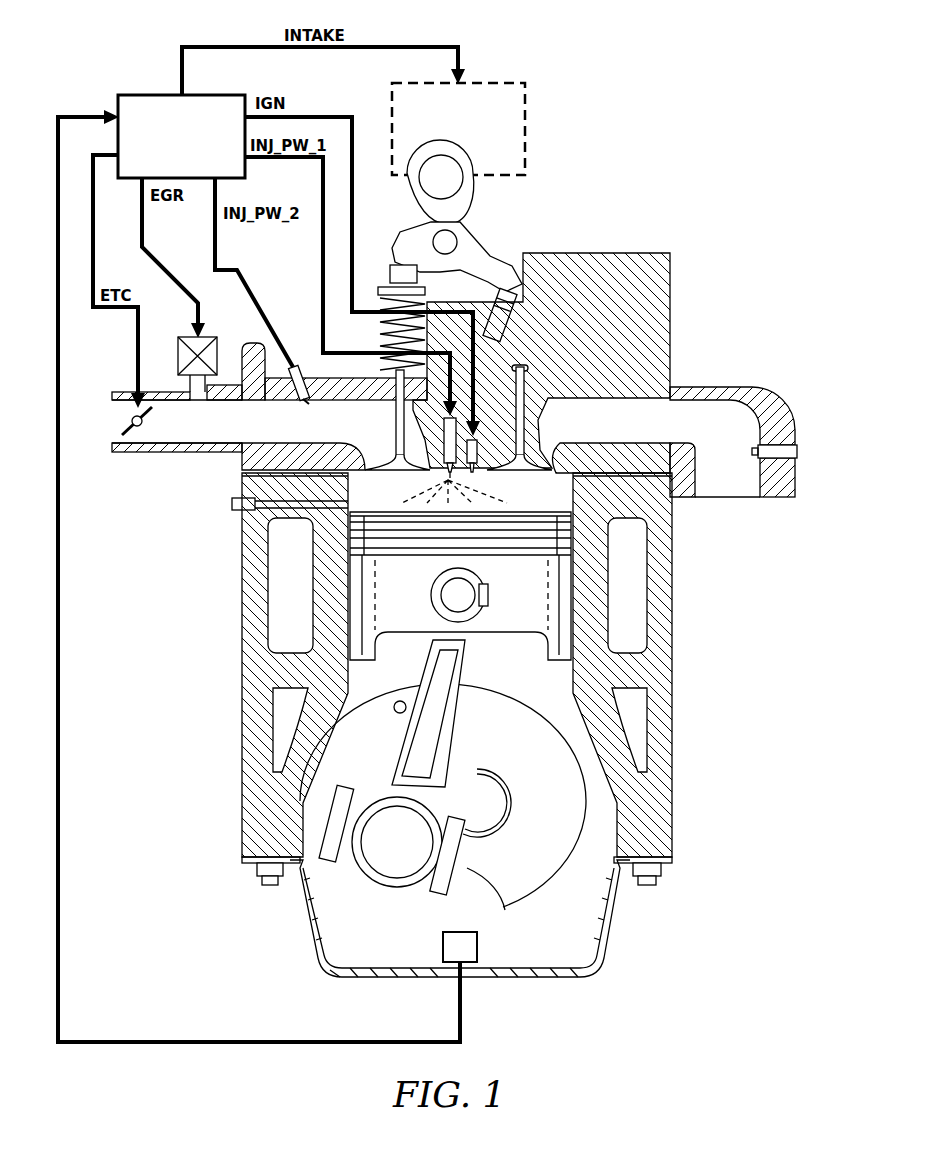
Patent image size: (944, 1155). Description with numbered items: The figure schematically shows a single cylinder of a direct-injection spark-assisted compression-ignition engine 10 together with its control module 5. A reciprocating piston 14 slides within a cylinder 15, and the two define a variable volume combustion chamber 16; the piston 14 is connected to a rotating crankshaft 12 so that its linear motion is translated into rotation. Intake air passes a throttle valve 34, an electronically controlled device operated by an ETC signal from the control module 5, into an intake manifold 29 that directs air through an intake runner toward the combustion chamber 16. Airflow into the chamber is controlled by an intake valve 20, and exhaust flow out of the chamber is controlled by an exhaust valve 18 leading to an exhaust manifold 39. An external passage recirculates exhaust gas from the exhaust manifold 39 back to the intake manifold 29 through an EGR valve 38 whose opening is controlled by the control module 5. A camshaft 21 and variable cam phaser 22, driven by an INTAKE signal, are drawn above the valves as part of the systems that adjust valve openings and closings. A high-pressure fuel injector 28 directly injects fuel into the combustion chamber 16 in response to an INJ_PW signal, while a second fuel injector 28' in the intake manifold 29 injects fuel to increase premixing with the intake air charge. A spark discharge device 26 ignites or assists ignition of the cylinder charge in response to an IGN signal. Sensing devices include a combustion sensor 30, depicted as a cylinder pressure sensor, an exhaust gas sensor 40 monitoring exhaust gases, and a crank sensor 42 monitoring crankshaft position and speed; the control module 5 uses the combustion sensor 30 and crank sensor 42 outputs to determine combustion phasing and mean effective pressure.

The control module 5 is at (158, 107).
The engine 10 is at (612, 985).
The crankshaft 12 is at (478, 812).
The piston 14 is at (542, 598).
The cylinder 15 is at (584, 511).
The combustion chamber 16 is at (384, 502).
The exhaust valve 18 is at (520, 440).
The intake valve 20 is at (400, 440).
The camshaft 21 is at (450, 178).
The variable cam phaser 22 is at (515, 128).
The spark discharge device 26 is at (476, 440).
The high-pressure fuel injector 28 is at (458, 399).
The second fuel injector 28' is at (289, 338).
The intake manifold 29 is at (233, 430).
The combustion sensor 30 is at (232, 512).
The throttle valve 34 is at (140, 440).
The EGR valve 38 is at (168, 353).
The exhaust manifold 39 is at (657, 422).
The exhaust gas sensor 40 is at (778, 453).
The crank sensor 42 is at (477, 947).